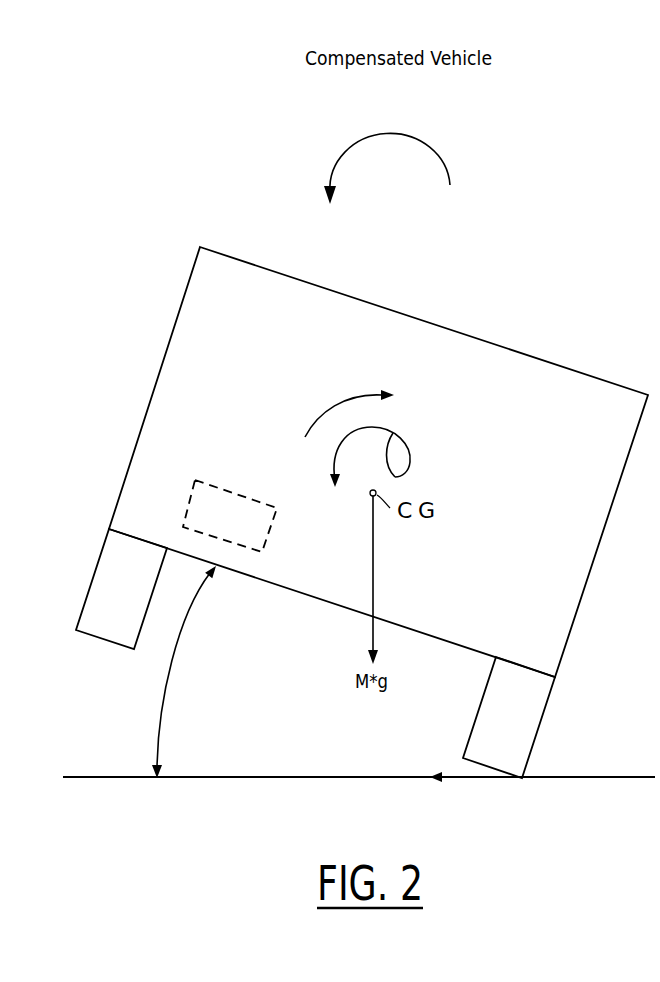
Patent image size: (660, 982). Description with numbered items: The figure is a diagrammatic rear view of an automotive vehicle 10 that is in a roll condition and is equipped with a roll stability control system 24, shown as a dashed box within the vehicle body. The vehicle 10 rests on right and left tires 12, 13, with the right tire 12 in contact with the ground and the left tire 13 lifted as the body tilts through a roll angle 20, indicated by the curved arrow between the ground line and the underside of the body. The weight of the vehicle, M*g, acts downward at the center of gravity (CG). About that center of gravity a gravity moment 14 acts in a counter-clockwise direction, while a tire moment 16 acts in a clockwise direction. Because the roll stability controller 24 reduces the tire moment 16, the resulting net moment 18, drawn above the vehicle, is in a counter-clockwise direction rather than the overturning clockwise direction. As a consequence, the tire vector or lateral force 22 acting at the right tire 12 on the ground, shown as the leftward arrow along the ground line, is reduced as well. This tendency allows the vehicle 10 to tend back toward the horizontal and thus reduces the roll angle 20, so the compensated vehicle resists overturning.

The automotive vehicle 10 is at (448, 328).
The right tire 12 is at (542, 727).
The left tire 13 is at (110, 646).
The gravity moment 14 is at (395, 477).
The tire moment 16 is at (370, 390).
The net moment 18 is at (437, 155).
The roll angle 20 is at (167, 672).
The lateral force 22 is at (475, 777).
The roll stability control system 24 is at (220, 488).